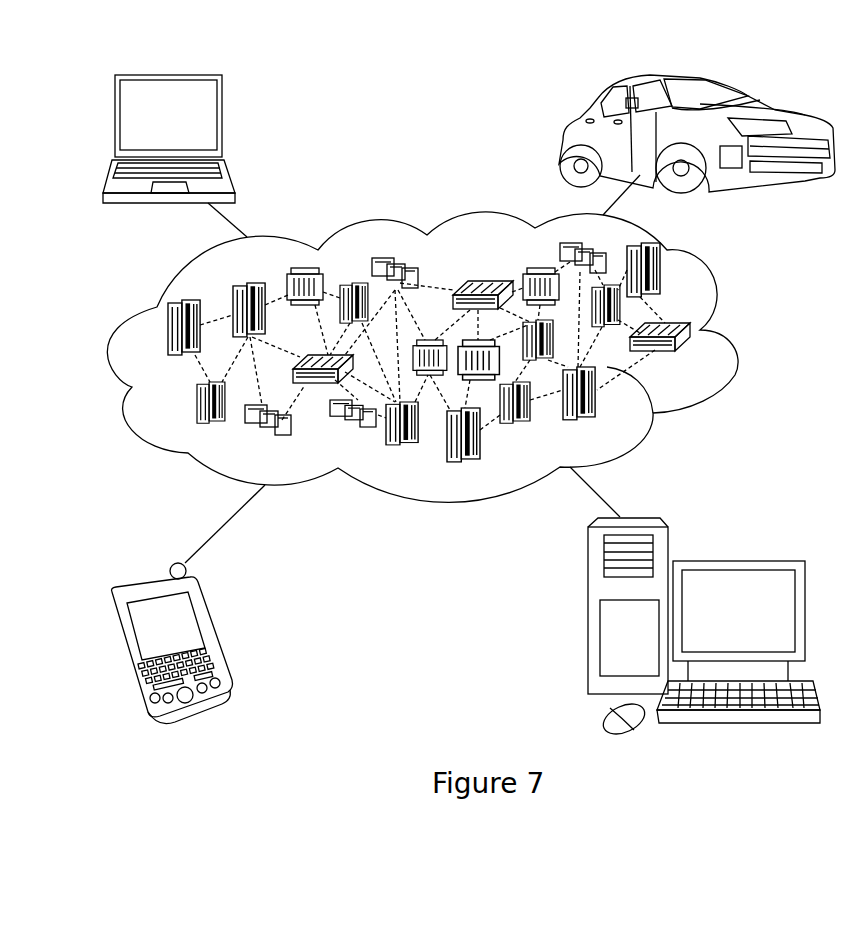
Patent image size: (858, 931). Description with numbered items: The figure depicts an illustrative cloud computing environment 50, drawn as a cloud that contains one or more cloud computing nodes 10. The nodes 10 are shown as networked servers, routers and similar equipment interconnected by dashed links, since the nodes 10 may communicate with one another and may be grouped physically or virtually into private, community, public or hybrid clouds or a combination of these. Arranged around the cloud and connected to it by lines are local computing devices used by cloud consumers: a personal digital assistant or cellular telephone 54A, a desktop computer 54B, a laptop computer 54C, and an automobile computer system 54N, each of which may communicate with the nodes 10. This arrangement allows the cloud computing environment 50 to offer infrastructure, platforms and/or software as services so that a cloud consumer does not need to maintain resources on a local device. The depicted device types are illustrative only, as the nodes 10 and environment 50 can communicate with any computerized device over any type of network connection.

The cloud computing node 10 is at (757, 328).
The cloud computing environment 50 is at (444, 387).
The personal digital assistant or cellular telephone 54A is at (214, 632).
The desktop computer 54B is at (738, 561).
The laptop computer 54C is at (222, 122).
The automobile computer system 54N is at (565, 138).